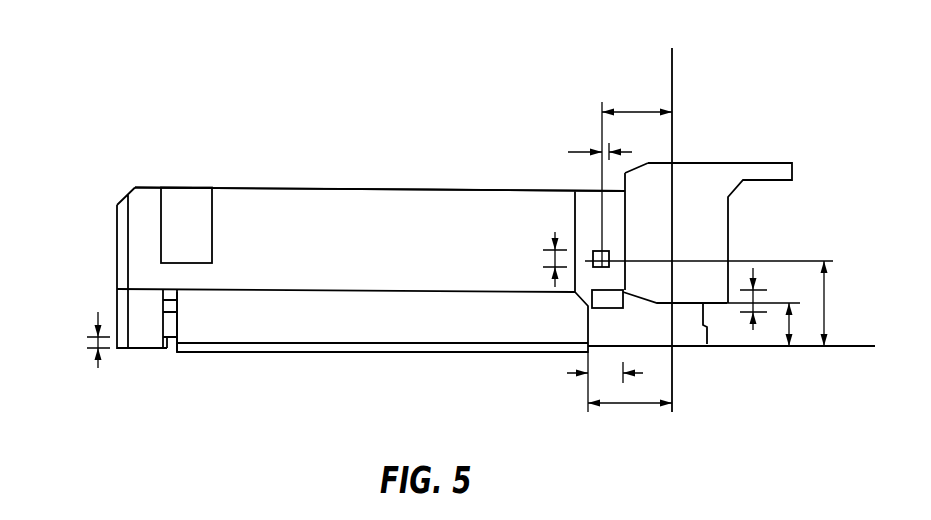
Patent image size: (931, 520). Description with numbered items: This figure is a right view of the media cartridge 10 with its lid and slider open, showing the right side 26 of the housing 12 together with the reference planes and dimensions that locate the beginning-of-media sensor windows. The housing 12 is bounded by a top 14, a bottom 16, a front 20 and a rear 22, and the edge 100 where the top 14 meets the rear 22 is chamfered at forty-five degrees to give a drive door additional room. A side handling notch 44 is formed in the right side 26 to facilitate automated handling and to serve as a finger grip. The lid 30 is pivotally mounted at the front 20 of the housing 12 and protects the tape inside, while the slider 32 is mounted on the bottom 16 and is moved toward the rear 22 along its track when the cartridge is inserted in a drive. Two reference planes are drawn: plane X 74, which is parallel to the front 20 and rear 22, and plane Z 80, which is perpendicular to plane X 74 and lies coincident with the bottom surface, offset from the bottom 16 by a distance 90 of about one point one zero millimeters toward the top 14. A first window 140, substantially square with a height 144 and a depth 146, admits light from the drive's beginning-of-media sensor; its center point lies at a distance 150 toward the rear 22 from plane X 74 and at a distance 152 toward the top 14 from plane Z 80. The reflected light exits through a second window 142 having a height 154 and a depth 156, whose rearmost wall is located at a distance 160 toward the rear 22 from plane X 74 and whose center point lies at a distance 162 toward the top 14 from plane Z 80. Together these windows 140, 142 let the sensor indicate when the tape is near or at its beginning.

The media cartridge 10 is at (278, 104).
The edge 100 is at (132, 187).
The housing 12 is at (343, 187).
The top 14 is at (430, 189).
The side handling notch 44 is at (190, 187).
The right side 26 is at (315, 246).
The rear 22 is at (90, 232).
The bottom 16 is at (168, 352).
The slider 32 is at (277, 352).
The distance 90 is at (87, 338).
The first window 140 is at (597, 252).
The second window 142 is at (592, 296).
The height 144 is at (542, 260).
The depth 146 is at (577, 151).
The distance 150 is at (637, 110).
The plane X 74 is at (675, 72).
The lid 30 is at (773, 163).
The front 20 is at (818, 225).
The distance 152 is at (824, 302).
The distance 162 is at (772, 330).
The height 154 is at (750, 330).
The plane Z 80 is at (863, 350).
The depth 156 is at (572, 373).
The distance 160 is at (637, 405).